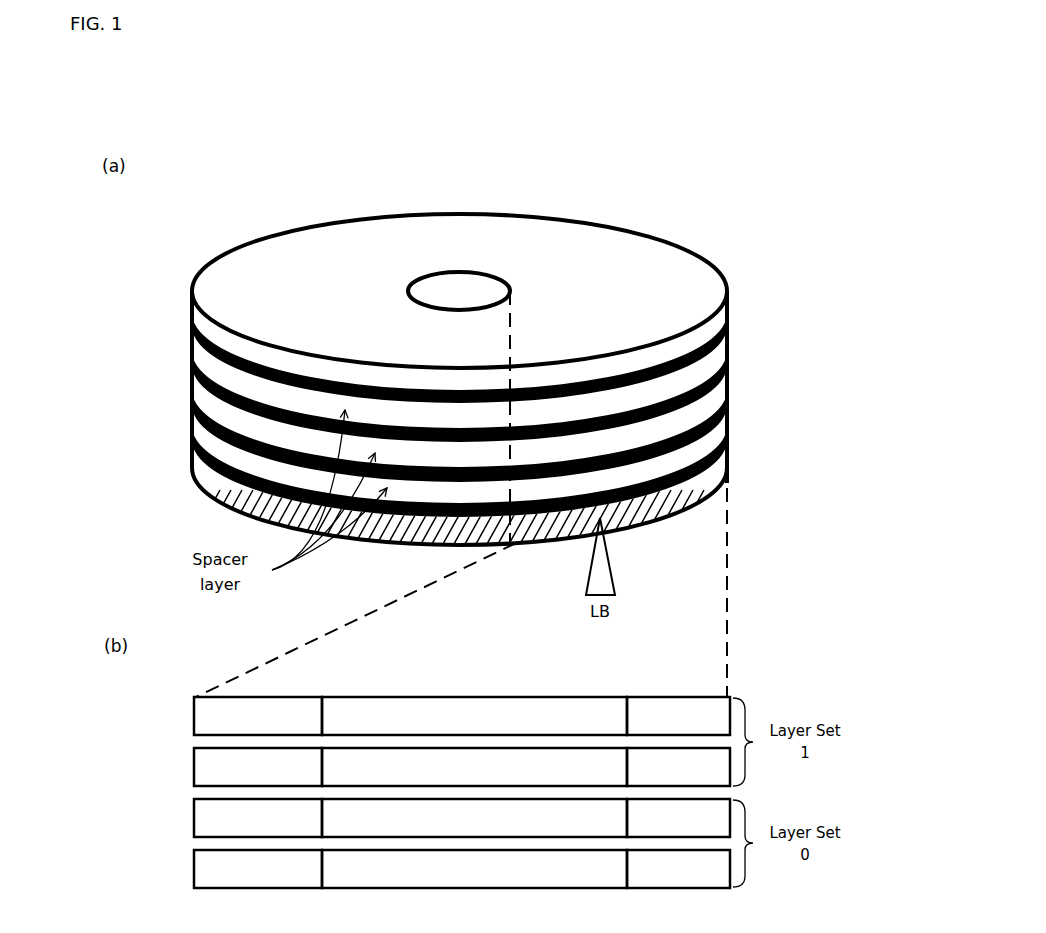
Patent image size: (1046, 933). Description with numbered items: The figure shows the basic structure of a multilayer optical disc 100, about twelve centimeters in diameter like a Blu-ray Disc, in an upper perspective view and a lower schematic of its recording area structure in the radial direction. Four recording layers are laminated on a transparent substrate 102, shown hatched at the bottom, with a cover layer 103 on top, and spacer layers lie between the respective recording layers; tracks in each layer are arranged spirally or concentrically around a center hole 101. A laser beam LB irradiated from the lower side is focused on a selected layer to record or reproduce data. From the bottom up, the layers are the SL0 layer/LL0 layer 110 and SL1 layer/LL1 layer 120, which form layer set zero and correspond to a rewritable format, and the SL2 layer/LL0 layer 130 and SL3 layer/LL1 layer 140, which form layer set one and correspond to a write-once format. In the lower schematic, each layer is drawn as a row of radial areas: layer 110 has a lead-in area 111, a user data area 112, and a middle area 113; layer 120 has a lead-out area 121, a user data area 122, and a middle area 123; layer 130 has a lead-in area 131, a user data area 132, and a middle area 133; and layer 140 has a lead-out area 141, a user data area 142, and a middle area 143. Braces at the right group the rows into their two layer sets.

The optical disc 100 is at (626, 184).
The center hole 101 is at (406, 290).
The transparent substrate 102 is at (702, 509).
The cover layer 103 is at (602, 367).
The SL0 layer/LL0 layer 110 is at (189, 440).
The SL1 layer/LL1 layer 120 is at (189, 402).
The SL2 layer/LL0 layer 130 is at (189, 365).
The SL3 layer/LL1 layer 140 is at (189, 327).
The lead-in area 111 is at (258, 869).
The user data area 112 is at (474, 869).
The middle area 113 is at (678, 869).
The lead-out area 121 is at (258, 818).
The user data area 122 is at (474, 818).
The middle area 123 is at (678, 818).
The lead-in area 131 is at (258, 767).
The user data area 132 is at (474, 767).
The middle area 133 is at (678, 767).
The lead-out area 141 is at (258, 716).
The user data area 142 is at (474, 716).
The middle area 143 is at (678, 716).